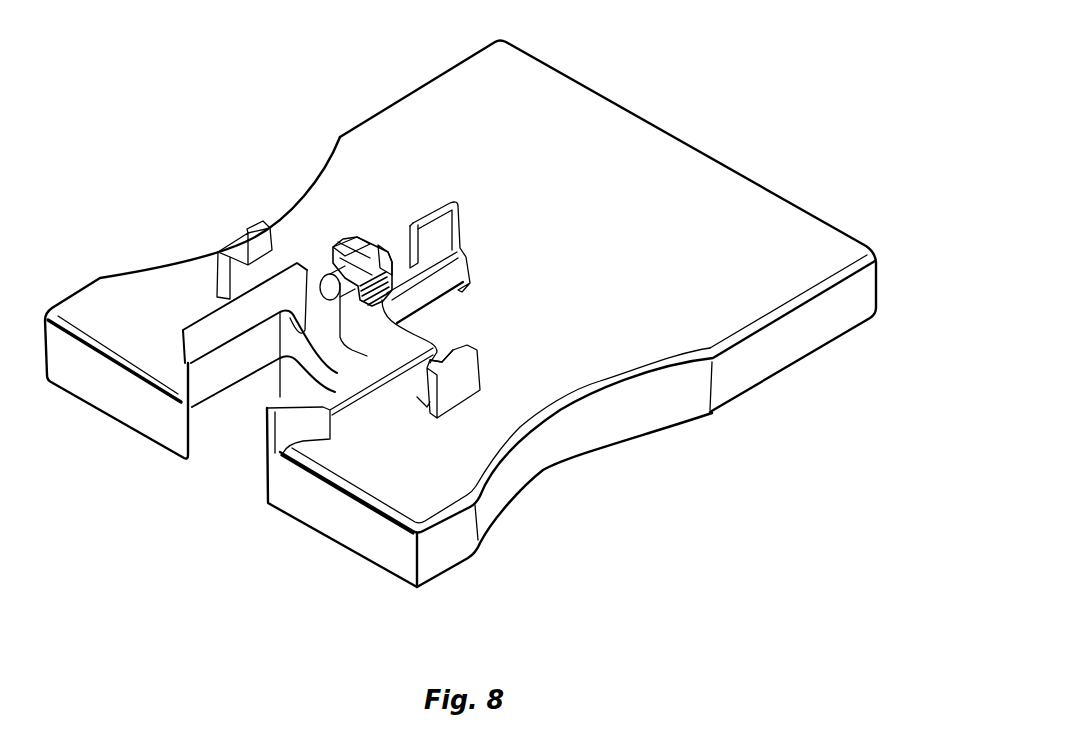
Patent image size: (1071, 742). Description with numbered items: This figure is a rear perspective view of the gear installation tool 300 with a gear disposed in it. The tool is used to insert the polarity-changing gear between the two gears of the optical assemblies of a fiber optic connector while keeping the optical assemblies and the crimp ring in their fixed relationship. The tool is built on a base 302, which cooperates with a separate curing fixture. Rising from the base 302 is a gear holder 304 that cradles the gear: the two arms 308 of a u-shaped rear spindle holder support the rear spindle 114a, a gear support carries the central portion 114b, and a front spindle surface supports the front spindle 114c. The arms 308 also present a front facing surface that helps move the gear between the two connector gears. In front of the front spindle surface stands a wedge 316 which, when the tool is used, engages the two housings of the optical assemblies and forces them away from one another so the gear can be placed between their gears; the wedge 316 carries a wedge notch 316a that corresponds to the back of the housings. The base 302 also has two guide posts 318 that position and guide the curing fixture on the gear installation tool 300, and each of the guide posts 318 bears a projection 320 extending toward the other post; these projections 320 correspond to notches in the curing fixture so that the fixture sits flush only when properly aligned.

The gear installation tool 300 is at (460, 293).
The base 302 is at (819, 218).
The gear holder 304 is at (335, 232).
The arms 308 is at (293, 317).
The wedge 316 is at (460, 230).
The wedge notch 316a is at (405, 227).
The guide posts 318 is at (228, 296).
The projections 320 is at (258, 248).
The rear spindle 114a is at (325, 290).
The central portion 114b is at (338, 242).
The front spindle 114c is at (375, 250).